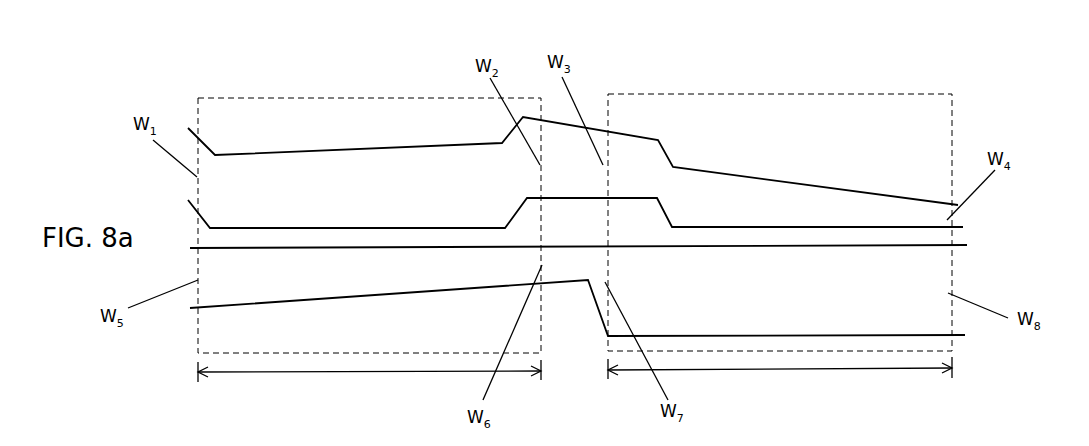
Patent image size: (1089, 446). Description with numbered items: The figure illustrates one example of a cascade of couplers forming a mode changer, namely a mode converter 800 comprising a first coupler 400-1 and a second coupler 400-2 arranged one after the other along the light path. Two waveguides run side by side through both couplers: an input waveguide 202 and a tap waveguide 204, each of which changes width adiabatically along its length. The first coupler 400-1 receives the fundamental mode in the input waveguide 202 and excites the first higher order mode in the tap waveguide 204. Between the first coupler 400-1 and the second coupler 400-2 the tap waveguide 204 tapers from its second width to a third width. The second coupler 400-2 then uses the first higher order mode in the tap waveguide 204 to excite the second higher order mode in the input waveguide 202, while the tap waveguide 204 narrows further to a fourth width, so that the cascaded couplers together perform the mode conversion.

The mode converter 800 is at (555, 207).
The first coupler 400-1 is at (373, 98).
The second coupler 400-2 is at (765, 93).
The tap waveguide 204 is at (880, 197).
The input waveguide 202 is at (247, 310).